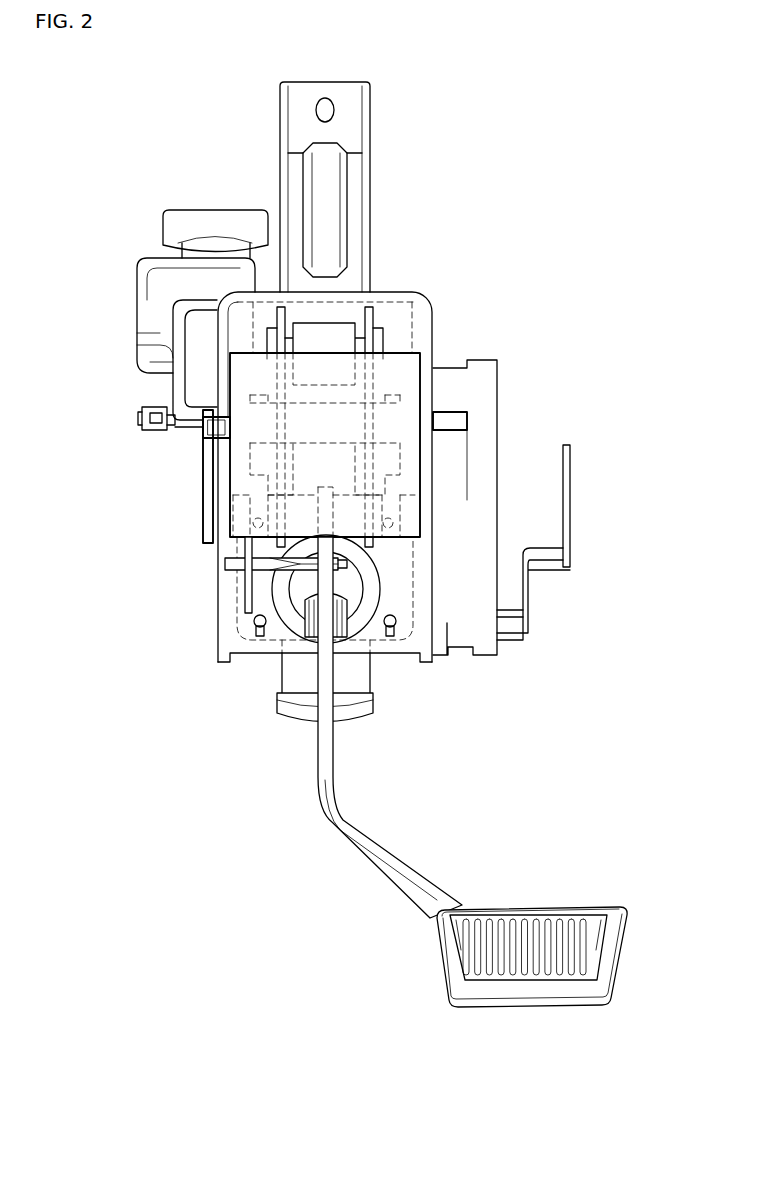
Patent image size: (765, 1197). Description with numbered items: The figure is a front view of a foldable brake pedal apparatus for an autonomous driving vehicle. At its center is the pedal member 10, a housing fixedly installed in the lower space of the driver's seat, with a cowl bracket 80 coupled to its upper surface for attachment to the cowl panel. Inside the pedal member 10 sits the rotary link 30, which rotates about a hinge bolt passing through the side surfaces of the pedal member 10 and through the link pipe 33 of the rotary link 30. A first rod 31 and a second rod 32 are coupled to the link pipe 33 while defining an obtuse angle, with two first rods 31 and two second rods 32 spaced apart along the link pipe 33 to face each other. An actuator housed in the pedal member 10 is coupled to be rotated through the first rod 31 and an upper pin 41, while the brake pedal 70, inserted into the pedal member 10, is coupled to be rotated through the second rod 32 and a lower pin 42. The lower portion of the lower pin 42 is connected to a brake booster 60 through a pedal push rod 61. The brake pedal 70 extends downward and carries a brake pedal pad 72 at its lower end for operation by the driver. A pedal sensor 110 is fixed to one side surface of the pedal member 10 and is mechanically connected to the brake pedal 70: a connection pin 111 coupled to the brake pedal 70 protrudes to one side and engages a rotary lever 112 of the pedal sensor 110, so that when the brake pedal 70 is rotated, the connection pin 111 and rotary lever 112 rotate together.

The pedal member 10 is at (422, 286).
The rotary link 30 is at (268, 373).
The first rod 31 is at (282, 333).
The second rod 32 is at (280, 457).
The link pipe 33 is at (450, 412).
The upper pin 41 is at (385, 333).
The lower pin 42 is at (465, 493).
The brake booster 60 is at (463, 527).
The pedal push rod 61 is at (497, 612).
The brake pedal 70 is at (375, 855).
The brake pedal pad 72 is at (540, 993).
The cowl bracket 80 is at (356, 172).
The pedal sensor 110 is at (208, 493).
The connection pin 111 is at (225, 560).
The rotary lever 112 is at (248, 605).